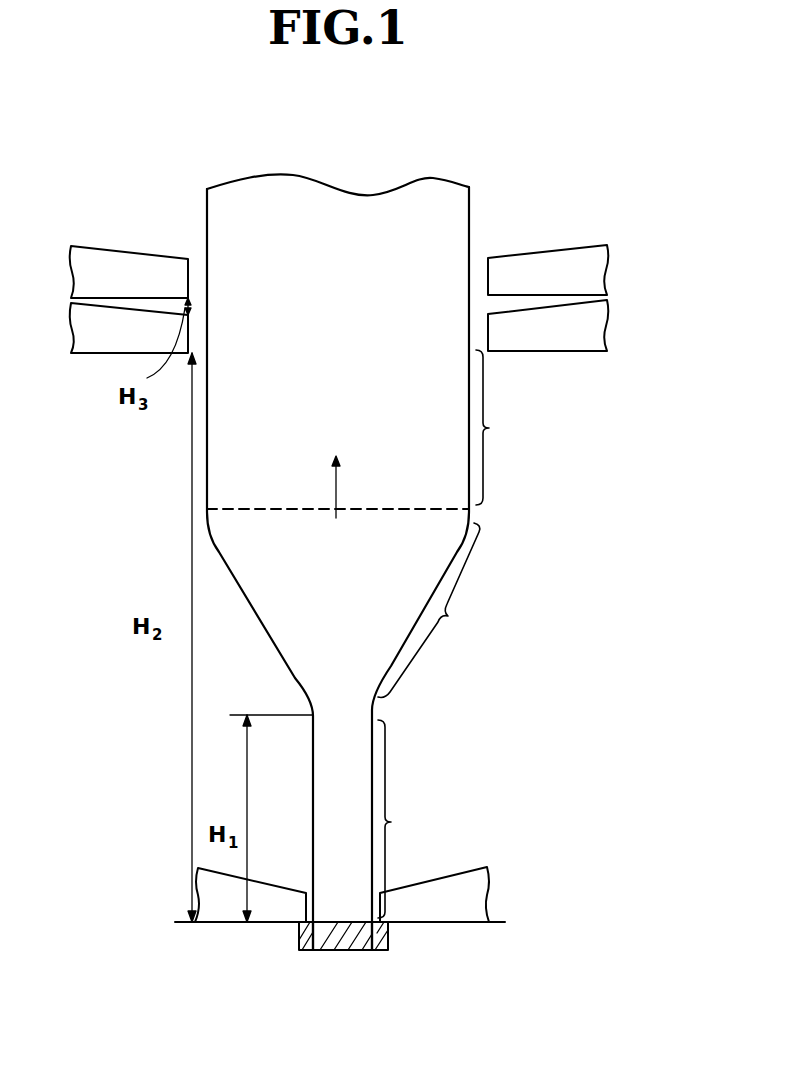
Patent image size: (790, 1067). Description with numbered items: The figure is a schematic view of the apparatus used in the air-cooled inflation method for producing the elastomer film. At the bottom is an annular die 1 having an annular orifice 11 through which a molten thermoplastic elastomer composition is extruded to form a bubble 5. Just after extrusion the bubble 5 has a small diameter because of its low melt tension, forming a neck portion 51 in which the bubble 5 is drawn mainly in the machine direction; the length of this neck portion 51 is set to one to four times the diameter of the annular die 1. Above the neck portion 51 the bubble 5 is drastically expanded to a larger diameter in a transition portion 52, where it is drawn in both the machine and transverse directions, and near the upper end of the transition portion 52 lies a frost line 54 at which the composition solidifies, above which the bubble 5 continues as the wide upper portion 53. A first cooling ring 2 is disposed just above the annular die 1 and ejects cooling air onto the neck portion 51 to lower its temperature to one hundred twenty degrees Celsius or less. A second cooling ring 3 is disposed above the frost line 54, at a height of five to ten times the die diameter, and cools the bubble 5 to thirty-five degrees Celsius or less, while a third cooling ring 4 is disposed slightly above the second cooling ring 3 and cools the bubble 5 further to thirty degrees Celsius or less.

The annular die 1 is at (388, 940).
The annular orifice 11 is at (315, 950).
The first cooling ring 2 is at (455, 892).
The second cooling ring 3 is at (562, 352).
The third cooling ring 4 is at (572, 244).
The bubble 5 is at (483, 470).
The neck portion 51 is at (407, 819).
The transition portion 52 is at (435, 610).
The upper cylindrical portion of vessel 53 is at (510, 427).
The frost line 54 is at (262, 508).